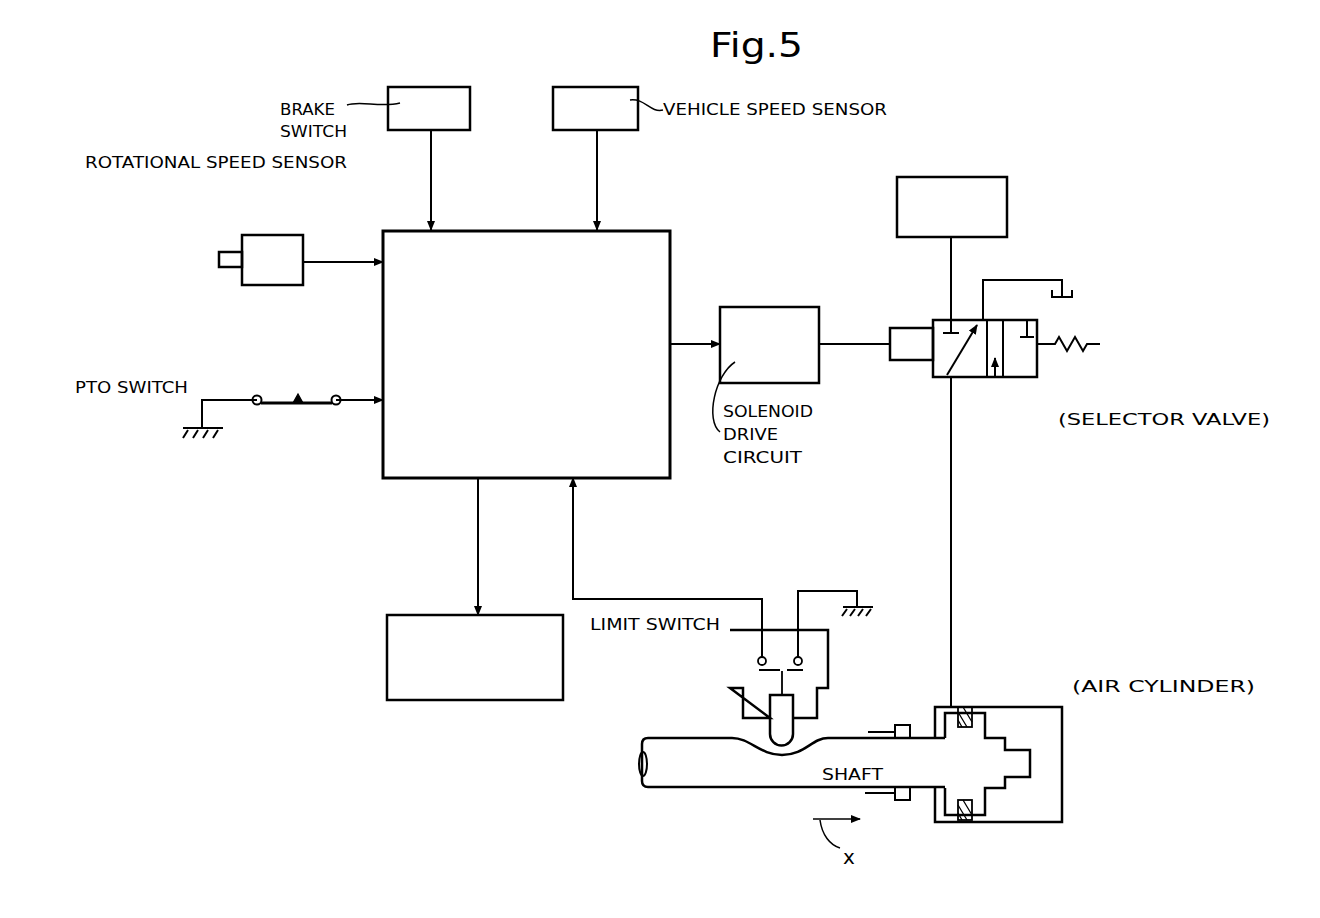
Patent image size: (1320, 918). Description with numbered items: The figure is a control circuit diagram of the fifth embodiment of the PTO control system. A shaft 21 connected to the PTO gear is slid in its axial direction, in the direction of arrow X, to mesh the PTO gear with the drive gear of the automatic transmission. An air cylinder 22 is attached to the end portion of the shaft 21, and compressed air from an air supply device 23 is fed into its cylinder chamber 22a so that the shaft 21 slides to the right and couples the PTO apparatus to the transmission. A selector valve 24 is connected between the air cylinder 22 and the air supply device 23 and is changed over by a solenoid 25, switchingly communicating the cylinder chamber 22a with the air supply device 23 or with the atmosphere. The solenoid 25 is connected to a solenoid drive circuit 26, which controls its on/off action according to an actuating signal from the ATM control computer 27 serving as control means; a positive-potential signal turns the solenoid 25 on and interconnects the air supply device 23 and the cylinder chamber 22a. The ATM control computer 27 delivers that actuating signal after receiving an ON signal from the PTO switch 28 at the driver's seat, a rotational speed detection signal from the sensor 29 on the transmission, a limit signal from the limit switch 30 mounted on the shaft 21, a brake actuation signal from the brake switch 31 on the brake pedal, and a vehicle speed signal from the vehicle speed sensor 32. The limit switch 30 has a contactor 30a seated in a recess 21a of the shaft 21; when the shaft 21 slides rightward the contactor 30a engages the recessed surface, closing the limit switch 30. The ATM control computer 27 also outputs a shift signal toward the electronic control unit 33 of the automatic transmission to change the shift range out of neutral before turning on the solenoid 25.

The shaft 21 is at (773, 778).
The recess 21a is at (828, 742).
The air cylinder 22 is at (1010, 707).
The cylinder chamber 22a is at (938, 802).
The air supply device 23 is at (957, 177).
The selector valve 24 is at (997, 378).
The solenoid 25 is at (910, 327).
The solenoid drive circuit 26 is at (757, 307).
The ATM control computer 27 is at (633, 230).
The PTO switch 28 is at (283, 406).
The sensor 29 is at (262, 235).
The limit switch 30 is at (728, 640).
The contactor 30a is at (780, 730).
The brake switch 31 is at (405, 87).
The vehicle speed sensor 32 is at (612, 87).
The electronic control unit 33 is at (387, 641).